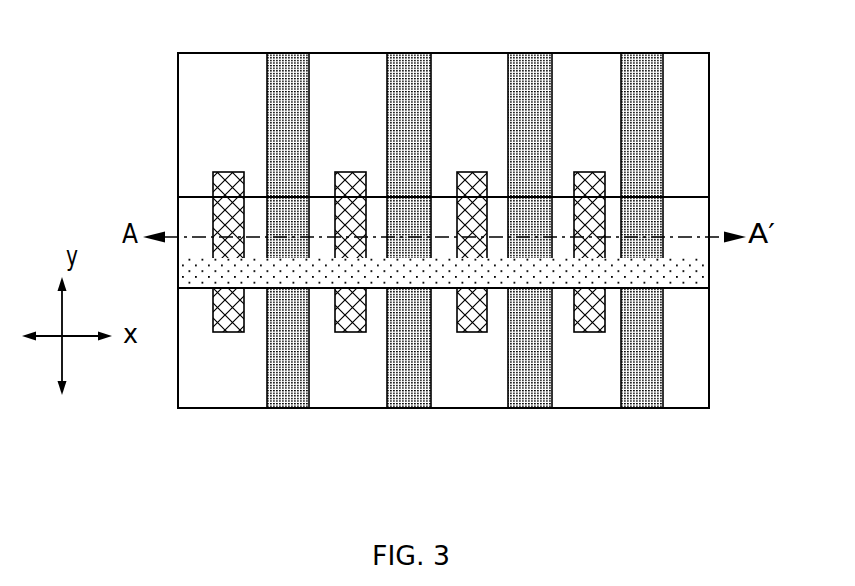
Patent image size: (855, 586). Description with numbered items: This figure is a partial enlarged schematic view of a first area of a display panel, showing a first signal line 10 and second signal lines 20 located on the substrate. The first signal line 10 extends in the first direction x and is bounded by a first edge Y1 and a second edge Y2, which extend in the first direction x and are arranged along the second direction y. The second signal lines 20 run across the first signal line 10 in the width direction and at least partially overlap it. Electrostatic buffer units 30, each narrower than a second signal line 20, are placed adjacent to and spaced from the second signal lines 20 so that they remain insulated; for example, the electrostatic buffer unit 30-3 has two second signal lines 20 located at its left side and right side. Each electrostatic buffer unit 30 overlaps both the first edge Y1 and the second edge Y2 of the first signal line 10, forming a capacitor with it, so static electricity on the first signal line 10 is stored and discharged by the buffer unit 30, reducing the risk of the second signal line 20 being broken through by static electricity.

The first signal line 10 is at (498, 208).
The second signal line 20 is at (285, 367).
The electrostatic buffer unit 30 is at (350, 320).
The electrostatic buffer unit 30-3 is at (467, 322).
The first edge Y1 is at (680, 290).
The second edge Y2 is at (680, 200).